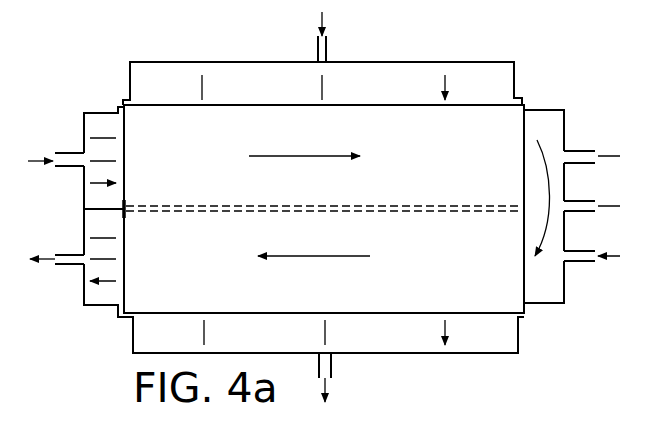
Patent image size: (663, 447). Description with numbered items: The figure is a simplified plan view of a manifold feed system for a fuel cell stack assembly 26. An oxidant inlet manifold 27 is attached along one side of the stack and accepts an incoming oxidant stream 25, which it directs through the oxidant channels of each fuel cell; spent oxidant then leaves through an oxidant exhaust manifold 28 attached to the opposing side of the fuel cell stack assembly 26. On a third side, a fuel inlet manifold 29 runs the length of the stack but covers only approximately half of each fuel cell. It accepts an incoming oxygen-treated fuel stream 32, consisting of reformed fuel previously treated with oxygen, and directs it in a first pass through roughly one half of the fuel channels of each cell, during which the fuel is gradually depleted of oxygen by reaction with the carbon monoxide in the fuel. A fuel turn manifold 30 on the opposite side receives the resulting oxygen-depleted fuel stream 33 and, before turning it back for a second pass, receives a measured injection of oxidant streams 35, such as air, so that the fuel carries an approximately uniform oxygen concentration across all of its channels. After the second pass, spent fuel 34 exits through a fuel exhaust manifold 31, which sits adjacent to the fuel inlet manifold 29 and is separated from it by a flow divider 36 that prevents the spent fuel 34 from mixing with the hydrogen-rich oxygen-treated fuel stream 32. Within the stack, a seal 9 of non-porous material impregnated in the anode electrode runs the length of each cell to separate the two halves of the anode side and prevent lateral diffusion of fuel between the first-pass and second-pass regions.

The seal 9 is at (470, 212).
The oxidant stream 25 is at (323, 20).
The fuel cell stack assembly 26 is at (476, 145).
The oxidant inlet manifold 27 is at (482, 73).
The oxidant exhaust manifold 28 is at (472, 338).
The fuel inlet manifold 29 is at (97, 122).
The fuel turn manifold 30 is at (546, 110).
The fuel exhaust manifold 31 is at (104, 295).
The oxygen-treated fuel stream 32 is at (36, 163).
The oxygen-depleted fuel stream 33 is at (544, 158).
The spent fuel 34 is at (50, 262).
The oxidant streams 35 is at (607, 206).
The flow divider 36 is at (107, 208).